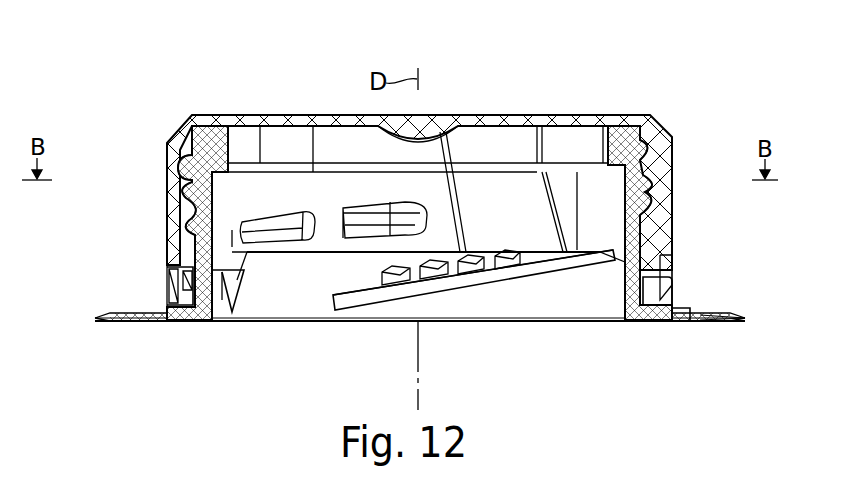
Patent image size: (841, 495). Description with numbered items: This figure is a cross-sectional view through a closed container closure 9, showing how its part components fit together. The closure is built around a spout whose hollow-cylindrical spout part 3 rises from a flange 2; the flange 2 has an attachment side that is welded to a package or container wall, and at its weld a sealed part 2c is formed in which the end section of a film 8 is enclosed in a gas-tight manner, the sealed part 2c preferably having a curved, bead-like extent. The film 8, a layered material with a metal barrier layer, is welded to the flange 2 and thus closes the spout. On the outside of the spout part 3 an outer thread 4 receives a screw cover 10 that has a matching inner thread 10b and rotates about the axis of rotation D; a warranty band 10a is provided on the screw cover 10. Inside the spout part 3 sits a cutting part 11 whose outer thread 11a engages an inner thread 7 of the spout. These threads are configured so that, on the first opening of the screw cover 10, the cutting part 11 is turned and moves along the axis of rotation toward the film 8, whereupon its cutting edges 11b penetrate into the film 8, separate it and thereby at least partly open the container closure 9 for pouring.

The flange part 2 is at (688, 322).
The sealed part 2c is at (732, 321).
The spout part 3 is at (645, 150).
The outer thread 4 is at (657, 185).
The inner thread 7 is at (193, 176).
The film 8 is at (527, 323).
The container closure 9 is at (449, 181).
The screw cover 10 is at (475, 118).
The warranty band 10a is at (667, 272).
The inner thread 10b is at (654, 197).
The cutting part 11 is at (615, 140).
The outer thread 11a is at (188, 199).
The cutting edges 11b is at (233, 312).